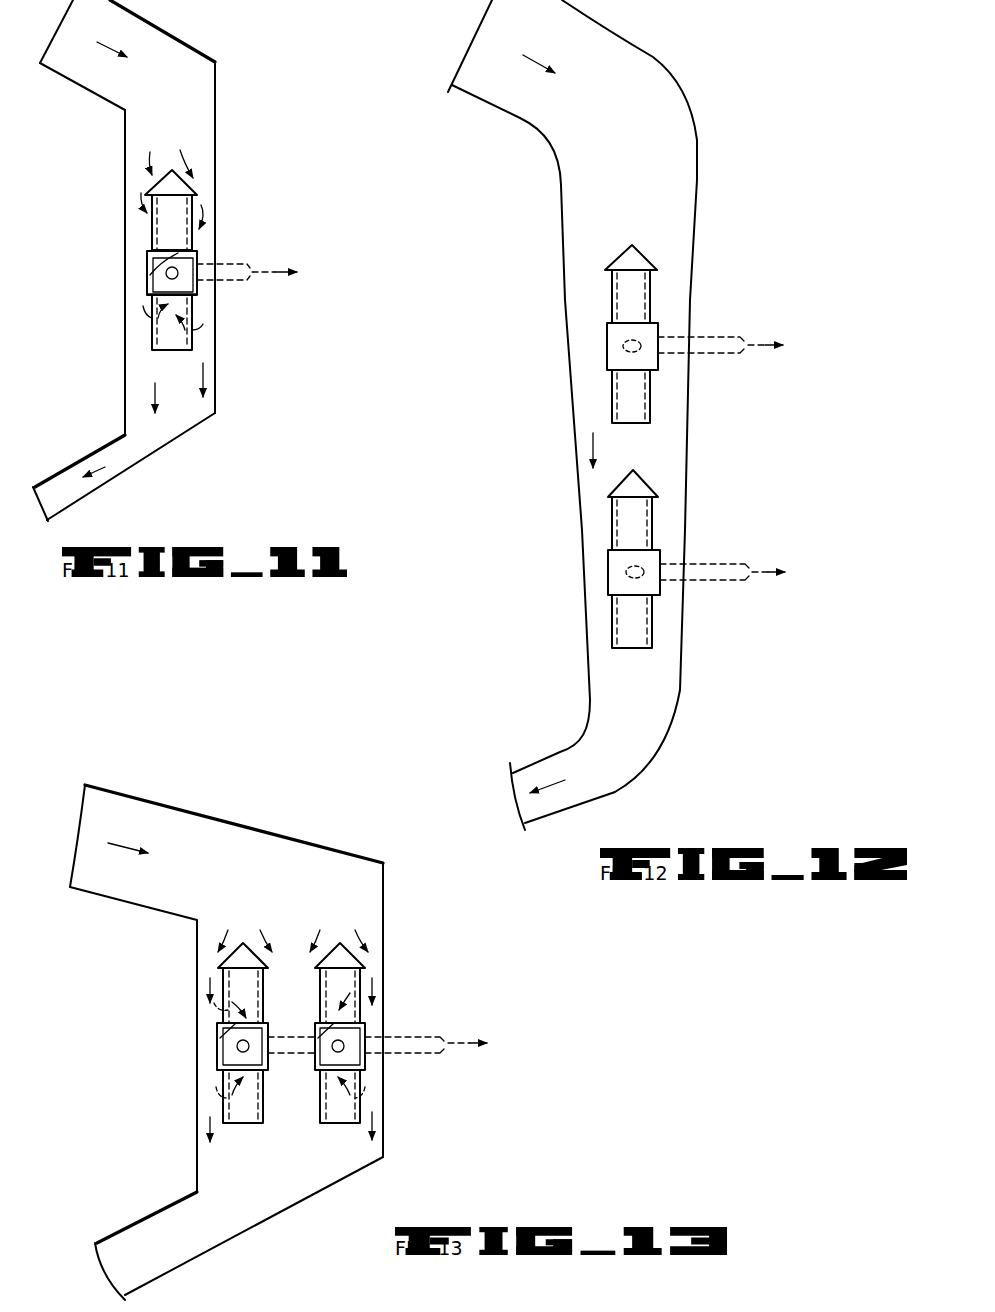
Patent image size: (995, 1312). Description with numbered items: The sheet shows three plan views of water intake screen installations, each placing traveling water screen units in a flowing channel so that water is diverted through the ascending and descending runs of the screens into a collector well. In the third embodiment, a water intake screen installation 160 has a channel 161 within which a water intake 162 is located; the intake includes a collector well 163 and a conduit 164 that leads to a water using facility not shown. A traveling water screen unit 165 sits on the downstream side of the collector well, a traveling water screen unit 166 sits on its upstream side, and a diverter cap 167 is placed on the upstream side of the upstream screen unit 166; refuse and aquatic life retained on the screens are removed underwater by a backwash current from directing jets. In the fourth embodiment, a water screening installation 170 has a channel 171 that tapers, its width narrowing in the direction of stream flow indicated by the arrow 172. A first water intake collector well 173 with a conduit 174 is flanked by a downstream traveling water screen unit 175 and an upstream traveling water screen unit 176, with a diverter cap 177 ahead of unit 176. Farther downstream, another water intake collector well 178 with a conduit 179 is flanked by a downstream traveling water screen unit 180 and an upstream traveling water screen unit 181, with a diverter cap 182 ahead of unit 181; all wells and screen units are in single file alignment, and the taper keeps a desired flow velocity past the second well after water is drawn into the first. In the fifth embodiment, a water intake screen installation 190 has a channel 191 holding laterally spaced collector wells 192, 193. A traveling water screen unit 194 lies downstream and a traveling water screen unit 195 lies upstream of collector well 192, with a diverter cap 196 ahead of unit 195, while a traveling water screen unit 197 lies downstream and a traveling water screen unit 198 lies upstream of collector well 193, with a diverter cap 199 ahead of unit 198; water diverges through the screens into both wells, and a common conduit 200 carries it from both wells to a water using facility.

In FIG. 11, the water intake screen installation 160 is at (186, 243).
In FIG. 11, the channel 161 is at (128, 110).
In FIG. 11, the water intake 162 is at (146, 291).
In FIG. 11, the collector well 163 is at (197, 293).
In FIG. 11, the conduit 164 is at (225, 262).
In FIG. 11, the traveling water screen unit 165 is at (151, 330).
In FIG. 11, the traveling water screen unit 166 is at (197, 206).
In FIG. 11, the diverter cap 167 is at (197, 192).
In FIG. 12, the water screening installation 170 is at (655, 420).
In FIG. 12, the channel 171 is at (645, 58).
In FIG. 12, the arrow 172 is at (593, 443).
In FIG. 12, the first water intake collector well 173 is at (607, 347).
In FIG. 12, the conduit 174 is at (718, 335).
In FIG. 12, the traveling water screen unit 175 is at (612, 390).
In FIG. 12, the traveling water screen unit 176 is at (612, 289).
In FIG. 12, the diverter cap 177 is at (607, 265).
In FIG. 12, the water intake collector well 178 is at (608, 570).
In FIG. 12, the conduit 179 is at (708, 565).
In FIG. 12, the traveling water screen unit 180 is at (612, 623).
In FIG. 12, the traveling water screen unit 181 is at (612, 522).
In FIG. 12, the diverter cap 182 is at (618, 489).
In FIG. 13, the water intake screen installation 190 is at (337, 1002).
In FIG. 13, the channel 191 is at (217, 832).
In FIG. 13, the collector well 192 is at (217, 1046).
In FIG. 13, the collector well 193 is at (365, 1060).
In FIG. 13, the traveling water screen unit 194 is at (223, 1098).
In FIG. 13, the traveling water screen unit 195 is at (223, 975).
In FIG. 13, the diverter cap 196 is at (218, 963).
In FIG. 13, the traveling water screen unit 197 is at (362, 1098).
In FIG. 13, the traveling water screen unit 198 is at (360, 978).
In FIG. 13, the diverter cap 199 is at (360, 963).
In FIG. 13, the common conduit 200 is at (440, 1035).